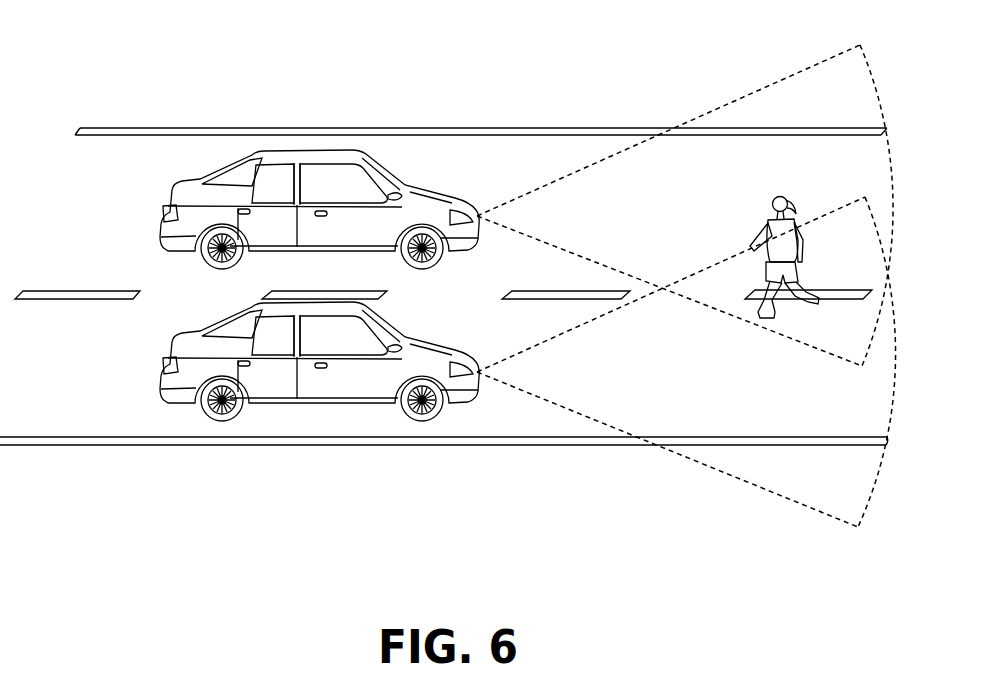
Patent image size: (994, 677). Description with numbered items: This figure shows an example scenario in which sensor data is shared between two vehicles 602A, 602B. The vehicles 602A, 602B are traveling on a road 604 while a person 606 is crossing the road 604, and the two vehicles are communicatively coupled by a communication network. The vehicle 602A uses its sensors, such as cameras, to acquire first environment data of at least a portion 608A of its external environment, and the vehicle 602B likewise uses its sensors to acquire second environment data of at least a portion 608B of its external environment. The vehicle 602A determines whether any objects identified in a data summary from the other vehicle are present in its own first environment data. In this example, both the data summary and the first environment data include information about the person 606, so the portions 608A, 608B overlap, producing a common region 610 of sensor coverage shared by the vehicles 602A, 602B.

The vehicle 602A is at (299, 156).
The vehicle 602B is at (345, 406).
The road 604 is at (93, 373).
The person 606 is at (808, 242).
The portion of the external environment 608A is at (618, 206).
The portion of the external environment 608B is at (661, 392).
The common region 610 is at (722, 276).